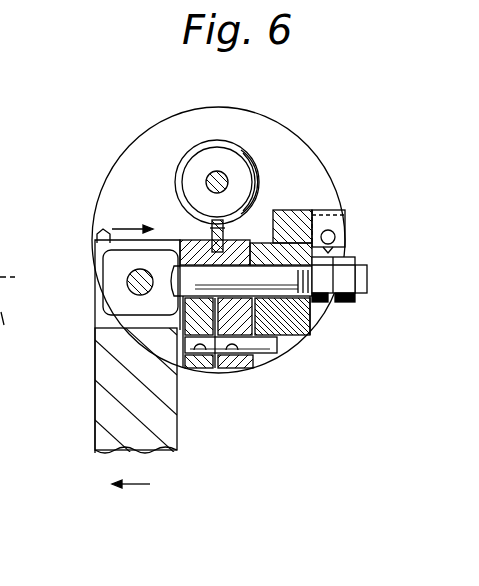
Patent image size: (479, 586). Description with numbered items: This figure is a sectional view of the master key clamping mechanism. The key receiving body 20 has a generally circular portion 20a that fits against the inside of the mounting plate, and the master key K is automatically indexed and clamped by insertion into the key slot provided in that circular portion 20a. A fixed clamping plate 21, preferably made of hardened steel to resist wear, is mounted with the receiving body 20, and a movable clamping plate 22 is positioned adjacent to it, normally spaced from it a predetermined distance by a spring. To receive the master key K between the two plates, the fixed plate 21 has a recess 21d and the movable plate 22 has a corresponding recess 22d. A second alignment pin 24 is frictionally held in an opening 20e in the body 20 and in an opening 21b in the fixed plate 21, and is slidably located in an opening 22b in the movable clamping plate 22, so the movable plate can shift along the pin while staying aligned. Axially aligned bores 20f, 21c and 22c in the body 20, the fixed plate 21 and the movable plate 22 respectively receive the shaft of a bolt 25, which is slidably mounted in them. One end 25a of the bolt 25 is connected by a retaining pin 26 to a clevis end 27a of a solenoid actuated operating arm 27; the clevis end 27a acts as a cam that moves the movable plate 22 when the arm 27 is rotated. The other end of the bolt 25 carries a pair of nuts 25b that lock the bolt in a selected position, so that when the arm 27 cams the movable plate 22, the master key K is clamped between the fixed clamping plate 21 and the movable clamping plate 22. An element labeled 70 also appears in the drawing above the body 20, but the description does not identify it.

The circular portion 20a is at (282, 143).
The bearing boss 70 is at (195, 160).
The recess 22d is at (183, 242).
The master key K is at (180, 218).
The recess 21d is at (253, 240).
The bore 20f is at (303, 222).
The clevis end 27a is at (93, 212).
The end of bolt 25a is at (103, 277).
The retaining pin 26 is at (126, 283).
The bore 22c is at (178, 271).
The bore 21c is at (178, 295).
The operating arm 27 is at (95, 428).
The movable clamping plate 22 is at (190, 372).
The opening 22b is at (208, 370).
The fixed clamping plate 21 is at (238, 372).
The opening 21b is at (246, 372).
The second alignment pin 24 is at (265, 345).
The key receiving body 20 is at (280, 330).
The opening 20e is at (300, 337).
The bolt 25 is at (367, 290).
The pair of nuts 25b is at (337, 313).